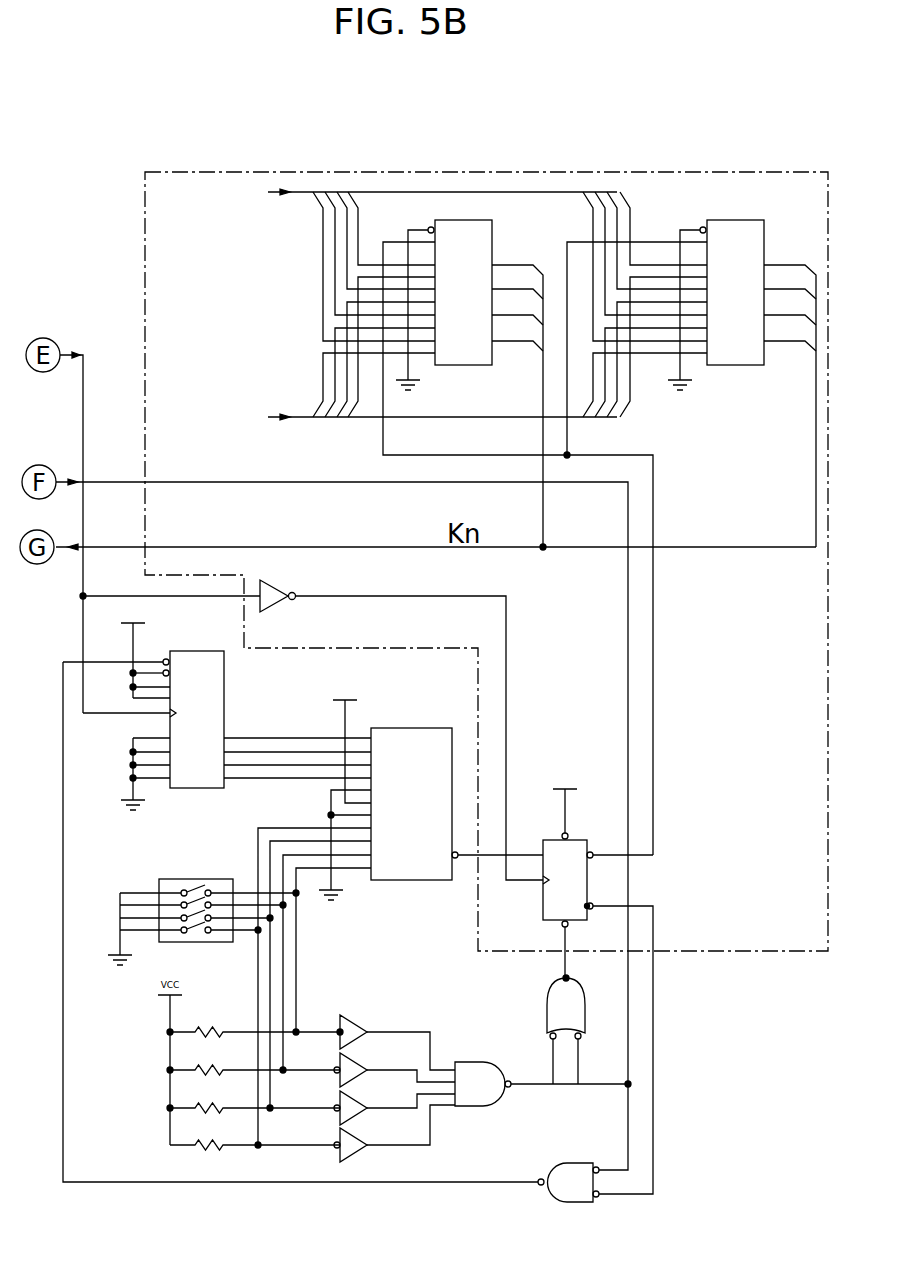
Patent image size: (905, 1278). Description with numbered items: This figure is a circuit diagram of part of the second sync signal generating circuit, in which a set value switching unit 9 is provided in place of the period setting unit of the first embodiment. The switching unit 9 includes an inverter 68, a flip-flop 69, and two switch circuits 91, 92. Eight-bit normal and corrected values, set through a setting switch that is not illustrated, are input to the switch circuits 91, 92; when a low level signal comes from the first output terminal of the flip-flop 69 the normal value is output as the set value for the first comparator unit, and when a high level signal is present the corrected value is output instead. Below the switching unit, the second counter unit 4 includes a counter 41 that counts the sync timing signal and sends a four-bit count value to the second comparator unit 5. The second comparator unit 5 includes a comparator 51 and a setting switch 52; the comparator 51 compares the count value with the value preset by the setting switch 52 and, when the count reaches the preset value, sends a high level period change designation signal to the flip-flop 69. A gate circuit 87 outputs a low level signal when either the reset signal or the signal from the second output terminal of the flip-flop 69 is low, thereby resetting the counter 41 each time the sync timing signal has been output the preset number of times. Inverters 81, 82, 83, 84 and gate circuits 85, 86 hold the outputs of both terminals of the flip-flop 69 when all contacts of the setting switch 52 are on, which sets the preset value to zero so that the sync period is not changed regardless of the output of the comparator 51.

The set value switching unit 9 is at (145, 210).
The switch circuit 91 is at (492, 242).
The switch circuit 92 is at (764, 242).
The inverter 68 is at (292, 584).
The second counter unit 4 is at (176, 708).
The counter 41 is at (200, 651).
The second comparator unit 5 is at (325, 898).
The comparator 51 is at (422, 728).
The setting switch 52 is at (185, 879).
The flip-flop 69 is at (580, 840).
The inverter 81 is at (360, 1020).
The inverter 82 is at (370, 1062).
The inverter 83 is at (367, 1100).
The inverter 84 is at (370, 1138).
The gate circuit 85 is at (483, 1062).
The gate circuit 86 is at (587, 1010).
The gate circuit 87 is at (556, 1163).